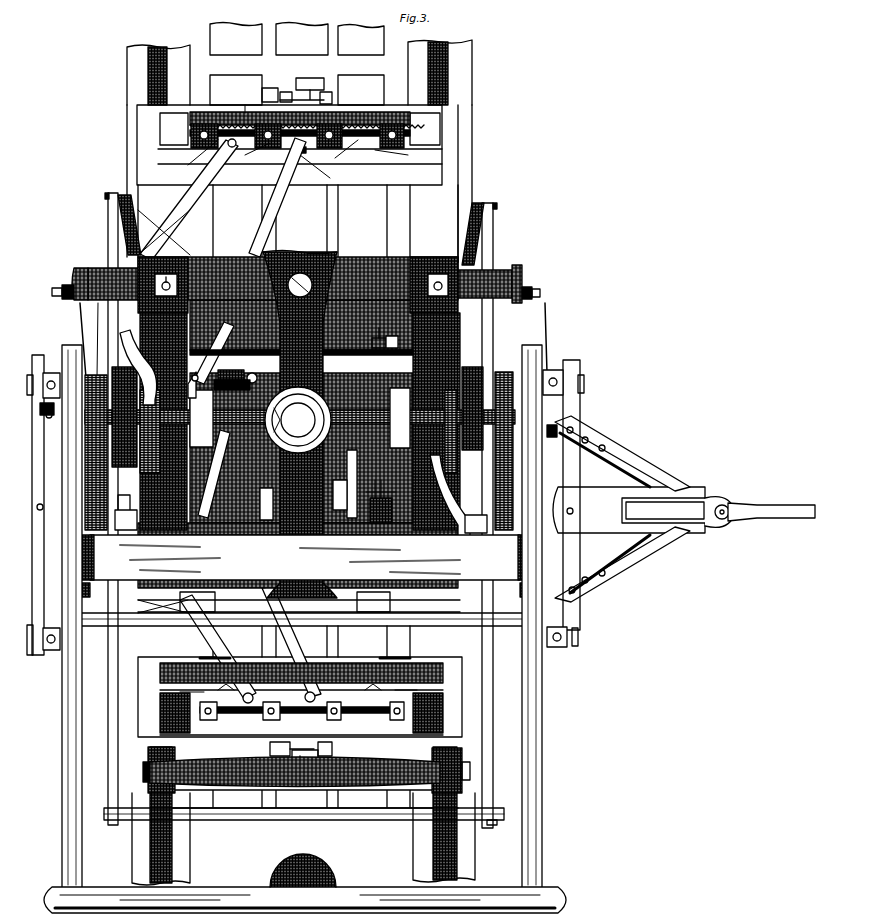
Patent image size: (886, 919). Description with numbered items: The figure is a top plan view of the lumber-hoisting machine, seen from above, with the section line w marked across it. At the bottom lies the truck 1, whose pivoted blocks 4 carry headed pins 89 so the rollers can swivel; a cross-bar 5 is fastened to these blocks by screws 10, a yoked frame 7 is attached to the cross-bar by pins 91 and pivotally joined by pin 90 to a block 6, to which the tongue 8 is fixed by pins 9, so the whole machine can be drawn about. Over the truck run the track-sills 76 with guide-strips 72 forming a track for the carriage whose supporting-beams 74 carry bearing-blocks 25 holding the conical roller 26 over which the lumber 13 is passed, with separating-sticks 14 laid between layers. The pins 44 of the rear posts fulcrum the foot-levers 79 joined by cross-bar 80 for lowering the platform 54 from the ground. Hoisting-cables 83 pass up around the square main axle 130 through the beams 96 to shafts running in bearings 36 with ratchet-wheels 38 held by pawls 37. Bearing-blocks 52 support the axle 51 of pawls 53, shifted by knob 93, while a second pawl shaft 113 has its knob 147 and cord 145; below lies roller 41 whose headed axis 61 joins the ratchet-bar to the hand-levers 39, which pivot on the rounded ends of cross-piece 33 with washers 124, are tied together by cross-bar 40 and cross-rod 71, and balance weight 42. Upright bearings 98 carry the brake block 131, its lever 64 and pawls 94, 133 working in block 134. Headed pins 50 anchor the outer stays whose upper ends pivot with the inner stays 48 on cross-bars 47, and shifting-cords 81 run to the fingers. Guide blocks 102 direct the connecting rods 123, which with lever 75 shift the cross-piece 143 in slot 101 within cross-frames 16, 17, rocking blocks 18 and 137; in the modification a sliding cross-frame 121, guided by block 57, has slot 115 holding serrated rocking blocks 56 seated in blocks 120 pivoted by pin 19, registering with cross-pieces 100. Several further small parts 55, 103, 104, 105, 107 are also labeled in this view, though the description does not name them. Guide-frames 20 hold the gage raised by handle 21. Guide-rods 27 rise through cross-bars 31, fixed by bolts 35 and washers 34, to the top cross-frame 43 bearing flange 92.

The truck 1 is at (302, 631).
The pivoted blocks 4 is at (304, 496).
The cross-bar 5 is at (306, 505).
The block 6 is at (664, 510).
The yoked frame 7 is at (451, 517).
The tongue 8 is at (771, 512).
The pins 9 is at (722, 521).
The screws 10 is at (588, 638).
The lumber 13 is at (309, 416).
The separating-sticks 14 is at (554, 658).
The cross-frame 16 is at (301, 670).
The cross-frame 17 is at (299, 421).
The rocking blocks 18 is at (302, 705).
The pin 19 is at (488, 207).
The guide-frames 20 is at (357, 748).
The handle 21 is at (313, 755).
The bearing-blocks 25 is at (305, 465).
The conical roller 26 is at (310, 772).
The guide-rods 27 is at (300, 268).
The cross-bars 31 is at (300, 434).
The cross-piece 33 is at (306, 557).
The washers 34 is at (301, 230).
The bolts 35 is at (448, 278).
The bearings 36 is at (297, 417).
The pawls 37 is at (295, 440).
The ratchet-wheels 38 is at (444, 383).
The hand-levers 39 is at (297, 617).
The cross-bar 40 is at (305, 892).
The roller 41 is at (298, 420).
The weight 42 is at (327, 882).
The top cross-frame 43 is at (300, 425).
The pins 44 is at (105, 210).
The cross-bars 47 is at (88, 270).
The inner stays 48 is at (78, 318).
The headed pins 50 is at (540, 294).
The axle 51 is at (305, 503).
The bearing-blocks 52 is at (301, 521).
The pawls 53 is at (299, 451).
The platform 54 is at (205, 477).
The arm 55 is at (260, 159).
The rocking blocks 56 is at (300, 152).
The block 57 is at (307, 155).
The headed axis 61 is at (42, 416).
The operating-lever 64 is at (346, 500).
The cross-rod 71 is at (299, 621).
The guide-strips 72 is at (490, 843).
The supporting-beams 74 is at (142, 761).
The lever 75 is at (214, 353).
The track-sills 76 is at (301, 462).
The foot-levers 79 is at (110, 700).
The cross-bar 80 is at (304, 820).
The shifting-cords 81 is at (100, 340).
The hoisting-cables 83 is at (376, 401).
The headed pins 89 is at (554, 380).
The pin 90 is at (637, 476).
The pins 91 is at (580, 598).
The flange 92 is at (375, 406).
The knob or roller 93 is at (385, 501).
The pawl 94 is at (298, 294).
The beams 96 is at (300, 421).
The upright bearings 98 is at (322, 485).
The cross-pieces 100 is at (307, 119).
The slot 101 is at (303, 721).
The guide blocks 102 is at (164, 411).
The pawl 103 is at (231, 371).
The ratchet 104 is at (232, 374).
The lever 105 is at (210, 389).
The pin 107 is at (251, 364).
The shaft 113 is at (298, 416).
The slot 115 is at (238, 121).
The blocks 120 is at (367, 166).
The sliding cross-frame 121 is at (230, 203).
The connecting rods 123 is at (198, 421).
The washers 124 is at (305, 592).
The square main axle 130 is at (300, 415).
The brake block 131 is at (274, 533).
The pawl 133 is at (354, 557).
The block 134 is at (357, 587).
The rocking blocks 137 is at (298, 689).
The cross-piece 143 is at (301, 340).
The cord 145 is at (373, 331).
The knob 147 is at (399, 335).
The section line w is at (545, 131).